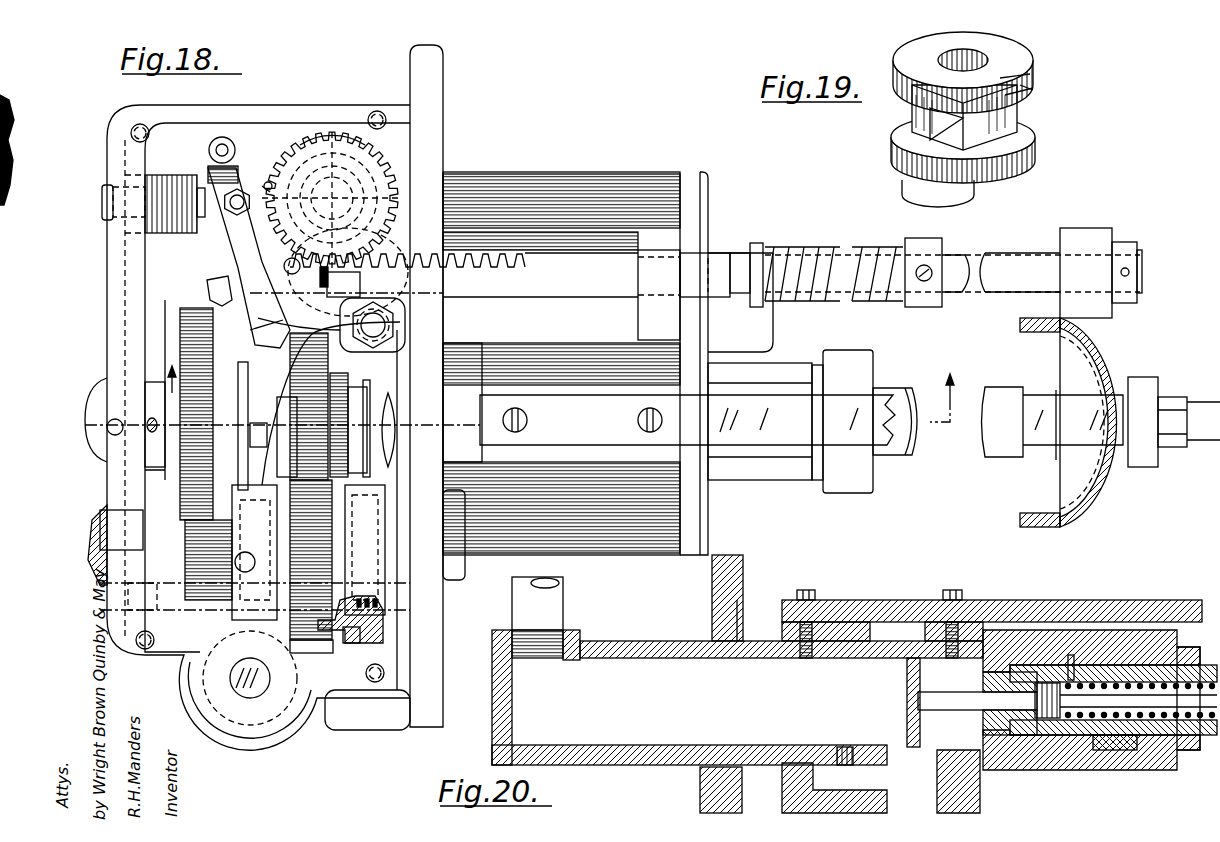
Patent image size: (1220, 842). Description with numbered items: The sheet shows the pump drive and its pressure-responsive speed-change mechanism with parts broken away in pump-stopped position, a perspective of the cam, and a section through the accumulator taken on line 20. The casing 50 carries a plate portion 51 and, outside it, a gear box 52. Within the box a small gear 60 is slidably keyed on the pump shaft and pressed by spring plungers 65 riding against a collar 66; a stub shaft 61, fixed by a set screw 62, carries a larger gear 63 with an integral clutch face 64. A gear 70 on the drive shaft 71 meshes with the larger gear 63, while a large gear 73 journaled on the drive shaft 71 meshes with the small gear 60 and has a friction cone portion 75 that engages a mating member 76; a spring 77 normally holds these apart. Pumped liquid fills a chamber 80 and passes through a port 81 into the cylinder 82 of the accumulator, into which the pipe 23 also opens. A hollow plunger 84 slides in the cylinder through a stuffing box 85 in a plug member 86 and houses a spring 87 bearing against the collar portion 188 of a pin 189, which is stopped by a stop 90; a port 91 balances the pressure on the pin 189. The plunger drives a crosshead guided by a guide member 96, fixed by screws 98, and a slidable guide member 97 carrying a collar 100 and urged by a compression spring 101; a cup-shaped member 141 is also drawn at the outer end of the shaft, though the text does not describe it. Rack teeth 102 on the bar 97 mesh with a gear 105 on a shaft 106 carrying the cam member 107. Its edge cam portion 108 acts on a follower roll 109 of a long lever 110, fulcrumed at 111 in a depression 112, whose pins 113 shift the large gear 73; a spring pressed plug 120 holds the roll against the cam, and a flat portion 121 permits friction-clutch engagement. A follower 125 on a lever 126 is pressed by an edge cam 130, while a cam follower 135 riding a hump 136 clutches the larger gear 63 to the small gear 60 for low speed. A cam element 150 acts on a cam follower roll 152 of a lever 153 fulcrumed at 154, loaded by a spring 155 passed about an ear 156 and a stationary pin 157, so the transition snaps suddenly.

In FIG. 18, the section line 20 is at (558, 384).
In FIG. 20, the pipe 23 is at (540, 615).
In FIG. 18, the casing 50 is at (558, 212).
In FIG. 20, the casing 50 is at (790, 803).
In FIG. 18, the plate portion 51 is at (433, 93).
In FIG. 20, the plate portion 51 is at (728, 592).
In FIG. 18, the gear box 52 is at (135, 325).
In FIG. 18, the small gear 60 is at (350, 360).
In FIG. 18, the stub shaft 61 is at (86, 425).
In FIG. 18, the set screw 62 is at (150, 423).
In FIG. 18, the larger gear 63 is at (182, 318).
In FIG. 18, the clutch face 64 is at (250, 452).
In FIG. 18, the spring plungers 65 is at (330, 395).
In FIG. 18, the collar 66 is at (372, 425).
In FIG. 18, the gear 70 is at (205, 585).
In FIG. 18, the drive shaft 71 is at (95, 545).
In FIG. 18, the large gear 73 is at (303, 630).
In FIG. 18, the friction cone portion 75 is at (340, 652).
In FIG. 18, the mating member 76 is at (372, 630).
In FIG. 18, the spring 77 is at (382, 614).
In FIG. 20, the chamber 80 is at (912, 780).
In FIG. 20, the port 81 is at (866, 752).
In FIG. 18, the cylinder 82 is at (82, 485).
In FIG. 20, the cylinder 82 is at (606, 672).
In FIG. 18, the plunger 84 is at (1000, 442).
In FIG. 20, the plunger 84 is at (1190, 752).
In FIG. 20, the stuffing box 85 is at (1110, 752).
In FIG. 18, the plug member 86 is at (795, 468).
In FIG. 20, the plug member 86 is at (1082, 762).
In FIG. 20, the spring 87 is at (1185, 683).
In FIG. 20, the stop 90 is at (985, 722).
In FIG. 20, the port 91 is at (1070, 670).
In FIG. 18, the guide member 96 is at (850, 422).
In FIG. 20, the guide member 96 is at (1097, 612).
In FIG. 18, the guide member 97 is at (835, 292).
In FIG. 18, the screws 98 is at (637, 420).
In FIG. 20, the screws 98 is at (950, 590).
In FIG. 18, the collar 100 is at (925, 258).
In FIG. 18, the compression spring 101 is at (832, 262).
In FIG. 18, the rack teeth 102 is at (462, 254).
In FIG. 18, the gear 105 is at (358, 142).
In FIG. 18, the shaft 106 is at (342, 132).
In FIG. 19, the cam member 107 is at (1012, 58).
In FIG. 18, the edge cam portion 108 is at (270, 180).
In FIG. 19, the edge cam portion 108 is at (1030, 76).
In FIG. 18, the follower roll 109 is at (305, 162).
In FIG. 18, the long lever 110 is at (238, 244).
In FIG. 18, the fulcrum 111 is at (252, 678).
In FIG. 18, the depression 112 is at (232, 722).
In FIG. 18, the pins 113 is at (242, 568).
In FIG. 18, the spring pressed plug 120 is at (197, 178).
In FIG. 18, the flat portion 121 is at (362, 262).
In FIG. 19, the flat portion 121 is at (1030, 88).
In FIG. 18, the follower 125 is at (354, 282).
In FIG. 18, the lever 126 is at (300, 350).
In FIG. 19, the edge cam 130 is at (1035, 147).
In FIG. 18, the cam follower 135 is at (266, 186).
In FIG. 19, the hump 136 is at (958, 205).
In FIG. 18, the cup 141 is at (1045, 325).
In FIG. 18, the cam element 150 is at (332, 201).
In FIG. 19, the cam element 150 is at (930, 120).
In FIG. 18, the cam follower roll 152 is at (332, 198).
In FIG. 18, the lever 153 is at (295, 314).
In FIG. 18, the fulcrum 154 is at (387, 324).
In FIG. 18, the loading spring 155 is at (212, 172).
In FIG. 18, the ear 156 is at (210, 290).
In FIG. 18, the stationary pin 157 is at (224, 137).
In FIG. 20, the collar portion 188 is at (1048, 718).
In FIG. 20, the pin 189 is at (915, 702).